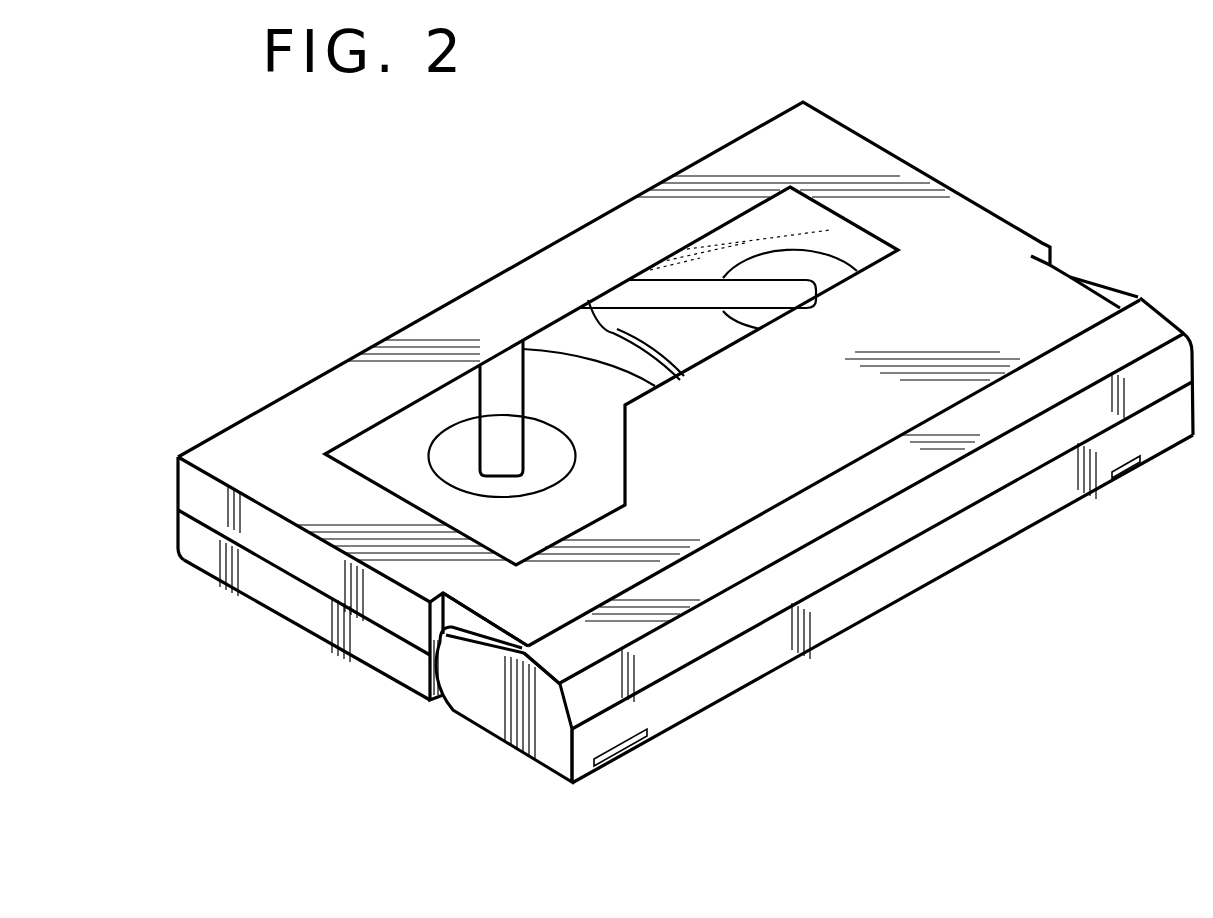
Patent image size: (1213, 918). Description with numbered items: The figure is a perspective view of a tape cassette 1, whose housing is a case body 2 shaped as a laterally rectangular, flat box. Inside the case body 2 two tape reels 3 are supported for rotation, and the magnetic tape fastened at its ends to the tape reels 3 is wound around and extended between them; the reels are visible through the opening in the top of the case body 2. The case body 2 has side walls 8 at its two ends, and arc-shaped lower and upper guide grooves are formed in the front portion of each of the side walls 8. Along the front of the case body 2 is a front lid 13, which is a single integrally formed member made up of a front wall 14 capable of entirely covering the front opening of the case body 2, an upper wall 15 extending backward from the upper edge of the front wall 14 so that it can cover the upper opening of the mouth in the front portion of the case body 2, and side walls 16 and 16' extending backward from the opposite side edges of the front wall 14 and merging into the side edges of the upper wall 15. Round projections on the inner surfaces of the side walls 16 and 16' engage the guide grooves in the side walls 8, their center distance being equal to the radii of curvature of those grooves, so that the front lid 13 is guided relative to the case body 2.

The tape cassette 1 is at (502, 192).
The case body 2 is at (300, 408).
The tape reels 3 is at (548, 352).
The side walls 8 is at (305, 606).
The front lid 13 is at (488, 833).
The front wall 14 is at (591, 738).
The upper wall 15 is at (553, 668).
The side wall 16 is at (1104, 258).
The side wall 16' is at (474, 704).